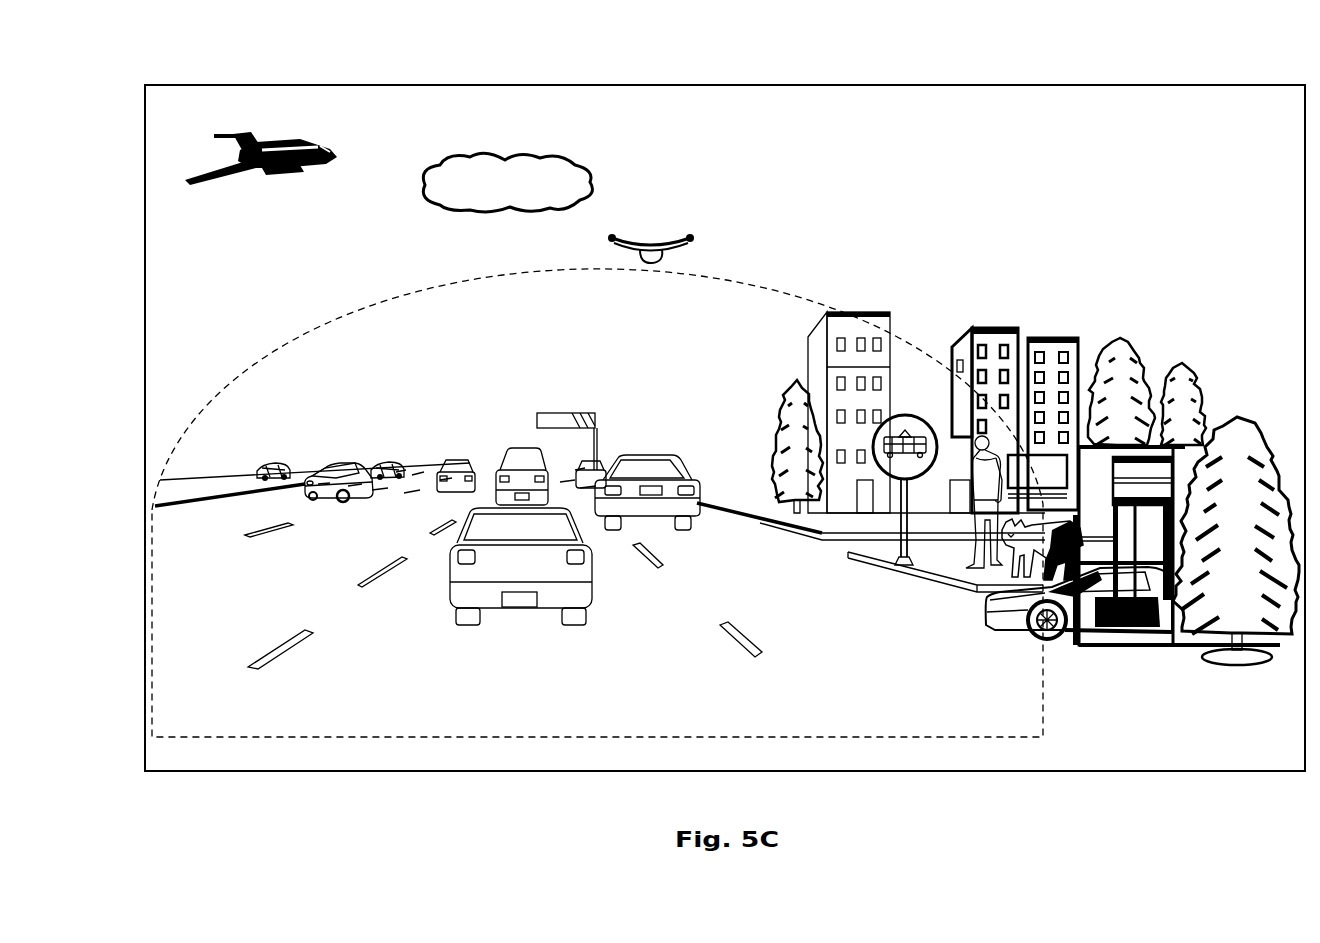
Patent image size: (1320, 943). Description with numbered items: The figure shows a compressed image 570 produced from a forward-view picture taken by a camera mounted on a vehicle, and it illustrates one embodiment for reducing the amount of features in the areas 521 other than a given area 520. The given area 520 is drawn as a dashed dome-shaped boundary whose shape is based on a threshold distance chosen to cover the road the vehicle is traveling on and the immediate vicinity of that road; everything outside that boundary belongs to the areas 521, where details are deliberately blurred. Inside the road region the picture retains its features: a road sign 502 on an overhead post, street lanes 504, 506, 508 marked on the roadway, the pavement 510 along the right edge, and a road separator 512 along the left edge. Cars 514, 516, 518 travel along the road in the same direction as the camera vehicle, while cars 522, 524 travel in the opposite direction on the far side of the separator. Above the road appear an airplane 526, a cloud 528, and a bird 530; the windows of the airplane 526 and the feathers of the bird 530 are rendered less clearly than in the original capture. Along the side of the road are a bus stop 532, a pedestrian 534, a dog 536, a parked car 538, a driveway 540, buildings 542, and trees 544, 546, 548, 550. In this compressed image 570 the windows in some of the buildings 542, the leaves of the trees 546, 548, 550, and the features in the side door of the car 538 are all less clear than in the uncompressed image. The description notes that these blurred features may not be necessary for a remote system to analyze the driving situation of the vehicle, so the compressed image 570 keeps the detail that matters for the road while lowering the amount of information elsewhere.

The road sign 502 is at (560, 413).
The street lane 504 is at (740, 635).
The street lane 506 is at (305, 640).
The street lane 508 is at (275, 535).
The pavement 510 is at (742, 508).
The road separator 512 is at (181, 510).
The car 514 is at (648, 455).
The car 516 is at (515, 612).
The car 518 is at (338, 465).
The given area 520 is at (762, 285).
The areas other than the given area 521 is at (1079, 193).
The car 522 is at (280, 465).
The car 524 is at (390, 465).
The airplane 526 is at (280, 165).
The cloud 528 is at (457, 207).
The bird 530 is at (677, 236).
The bus stop 532 is at (897, 537).
The pedestrian 534 is at (978, 518).
The dog 536 is at (1015, 553).
The car 538 is at (1090, 640).
The driveway 540 is at (1192, 652).
The buildings 542 is at (978, 327).
The tree 544 is at (790, 410).
The tree 546 is at (1123, 340).
The tree 548 is at (1180, 365).
The tree 550 is at (1240, 415).
The compressed image 570 is at (322, 85).